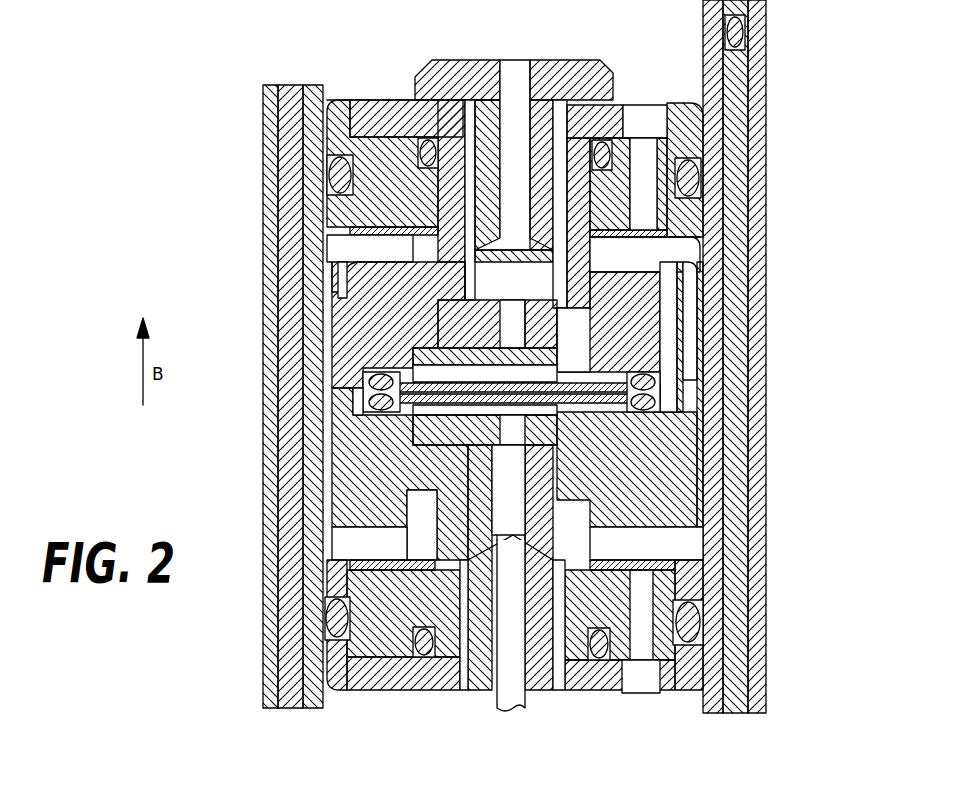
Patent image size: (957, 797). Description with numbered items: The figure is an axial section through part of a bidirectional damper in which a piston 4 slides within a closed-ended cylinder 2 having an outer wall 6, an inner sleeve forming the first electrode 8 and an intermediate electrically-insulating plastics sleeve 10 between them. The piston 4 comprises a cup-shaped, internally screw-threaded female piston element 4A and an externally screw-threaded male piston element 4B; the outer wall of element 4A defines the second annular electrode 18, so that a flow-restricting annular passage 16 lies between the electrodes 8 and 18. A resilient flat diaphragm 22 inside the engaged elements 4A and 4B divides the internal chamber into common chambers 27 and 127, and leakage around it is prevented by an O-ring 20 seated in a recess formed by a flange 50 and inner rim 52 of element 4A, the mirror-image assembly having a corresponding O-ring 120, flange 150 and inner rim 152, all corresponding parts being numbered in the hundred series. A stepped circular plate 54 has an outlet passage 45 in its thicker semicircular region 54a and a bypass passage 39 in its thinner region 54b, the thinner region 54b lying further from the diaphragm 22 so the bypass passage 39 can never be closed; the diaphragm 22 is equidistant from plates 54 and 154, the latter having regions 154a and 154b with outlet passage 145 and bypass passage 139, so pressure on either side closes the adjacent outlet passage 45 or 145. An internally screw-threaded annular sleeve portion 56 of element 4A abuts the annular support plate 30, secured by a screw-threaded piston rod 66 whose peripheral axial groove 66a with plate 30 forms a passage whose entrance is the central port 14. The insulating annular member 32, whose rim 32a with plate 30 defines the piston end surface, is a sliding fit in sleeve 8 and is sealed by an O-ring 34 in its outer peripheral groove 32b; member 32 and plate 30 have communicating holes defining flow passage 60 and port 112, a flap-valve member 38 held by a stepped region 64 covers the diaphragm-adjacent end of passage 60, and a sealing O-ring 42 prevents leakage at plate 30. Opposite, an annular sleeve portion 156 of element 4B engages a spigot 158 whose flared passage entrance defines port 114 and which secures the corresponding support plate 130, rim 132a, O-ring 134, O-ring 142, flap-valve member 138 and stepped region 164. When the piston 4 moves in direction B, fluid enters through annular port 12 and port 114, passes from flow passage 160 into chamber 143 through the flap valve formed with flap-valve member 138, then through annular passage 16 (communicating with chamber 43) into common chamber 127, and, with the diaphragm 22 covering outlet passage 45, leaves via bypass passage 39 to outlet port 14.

The cylinder 2 is at (768, 90).
The piston 4 is at (344, 60).
The female piston element 4A is at (650, 520).
The male piston element 4B is at (400, 262).
The outer wall 6 is at (300, 510).
The first electrode 8 is at (415, 520).
The electrically-insulating plastics sleeve 10 is at (330, 560).
The annular port 12 is at (655, 110).
The central port 14 is at (507, 702).
The annular passage 16 is at (680, 430).
The second annular electrode 18 is at (335, 325).
The O-ring 20 is at (358, 400).
The diaphragm 22 is at (660, 400).
The common chamber 27 is at (700, 343).
The annular support plate 30 is at (420, 692).
The annular member 32 is at (395, 112).
The rim 32a is at (330, 692).
The outer peripheral groove 32b is at (327, 178).
The O-ring 34 is at (690, 630).
The flap-valve member 38 is at (690, 595).
The bypass passage 39 is at (450, 445).
The sealing O-ring 42 is at (597, 660).
The chamber 43 is at (345, 540).
The outlet passage 45 is at (512, 445).
The flange 50 is at (557, 432).
The inner rim 52 is at (545, 470).
The circular plate 54 is at (620, 478).
The thicker semi-circular region 54a is at (540, 448).
The thinner semicircular region 54b is at (500, 448).
The annular sleeve portion 56 is at (690, 545).
The flow passage 60 is at (640, 655).
The stepped region 64 is at (400, 570).
The piston rod 66 is at (476, 692).
The peripheral axial groove 66a is at (530, 692).
The port 112 is at (655, 692).
The port 114 is at (512, 75).
The O-ring 120 is at (363, 385).
The common chamber 127 is at (560, 440).
The annular support plate 130 is at (410, 104).
The rim 132a is at (335, 104).
The O-ring 134 is at (690, 180).
The surface 138 is at (640, 237).
The bypass passage 139 is at (456, 356).
The sealing O-ring 142 is at (638, 130).
The chamber 143 is at (655, 262).
The outlet passage 145 is at (525, 340).
The flange 150 is at (660, 387).
The inner rim 152 is at (660, 398).
The circular plate 154 is at (640, 320).
The thicker semi-circular region 154a is at (490, 330).
The thinner semicircular region 154b is at (440, 362).
The annular sleeve portion 156 is at (590, 222).
The spigot 158 is at (585, 65).
The flow passage 160 is at (700, 145).
The stepped region 164 is at (405, 241).